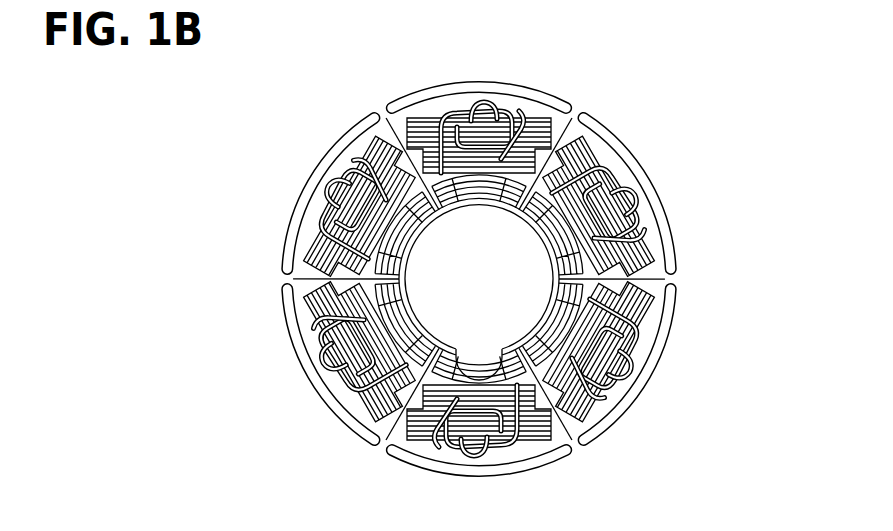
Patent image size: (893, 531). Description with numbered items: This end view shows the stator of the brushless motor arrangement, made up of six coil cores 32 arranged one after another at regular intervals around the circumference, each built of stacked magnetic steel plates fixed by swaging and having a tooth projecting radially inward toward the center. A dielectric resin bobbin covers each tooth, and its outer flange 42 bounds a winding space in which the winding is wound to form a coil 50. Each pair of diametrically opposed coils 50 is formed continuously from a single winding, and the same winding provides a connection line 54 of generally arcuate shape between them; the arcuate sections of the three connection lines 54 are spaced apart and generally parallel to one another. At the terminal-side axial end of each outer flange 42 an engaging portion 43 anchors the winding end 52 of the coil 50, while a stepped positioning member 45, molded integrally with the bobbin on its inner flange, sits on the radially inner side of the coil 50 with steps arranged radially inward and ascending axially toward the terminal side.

The coil core 32 is at (362, 127).
The outer flange 42 is at (412, 122).
The engaging portion 43 is at (487, 160).
The stepped positioning member 45 is at (585, 128).
The coil 50 is at (540, 125).
The winding end 52 is at (470, 112).
The connection line 54 is at (512, 120).